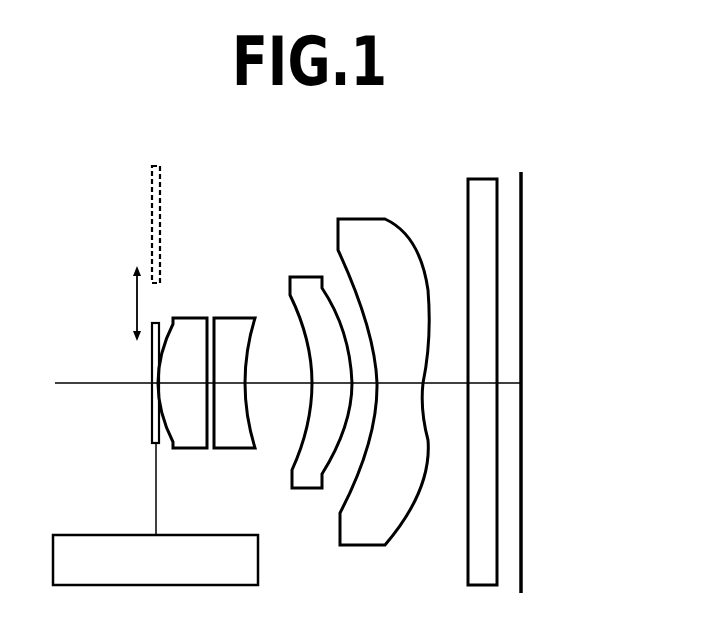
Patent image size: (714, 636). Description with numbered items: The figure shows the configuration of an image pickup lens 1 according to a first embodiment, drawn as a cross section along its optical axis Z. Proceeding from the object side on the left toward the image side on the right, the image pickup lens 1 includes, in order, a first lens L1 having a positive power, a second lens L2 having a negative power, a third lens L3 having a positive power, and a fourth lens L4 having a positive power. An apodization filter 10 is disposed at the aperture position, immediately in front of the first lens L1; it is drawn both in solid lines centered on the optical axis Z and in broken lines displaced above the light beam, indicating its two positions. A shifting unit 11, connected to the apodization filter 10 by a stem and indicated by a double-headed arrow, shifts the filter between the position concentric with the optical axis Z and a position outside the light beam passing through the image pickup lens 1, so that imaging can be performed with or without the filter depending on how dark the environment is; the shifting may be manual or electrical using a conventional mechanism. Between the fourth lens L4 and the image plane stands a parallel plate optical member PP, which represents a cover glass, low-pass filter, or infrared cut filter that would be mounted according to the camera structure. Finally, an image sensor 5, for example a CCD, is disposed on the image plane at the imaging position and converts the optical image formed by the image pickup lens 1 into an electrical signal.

The image pickup lens 1 is at (72, 166).
The apodization filter 10 is at (152, 222).
The shifting unit 11 is at (258, 556).
The image sensor 5 is at (522, 170).
The first lens L1 is at (188, 317).
The second lens L2 is at (230, 317).
The third lens L3 is at (304, 276).
The fourth lens L4 is at (362, 218).
The parallel plate optical member PP is at (482, 178).
The optical axis Z is at (279, 385).